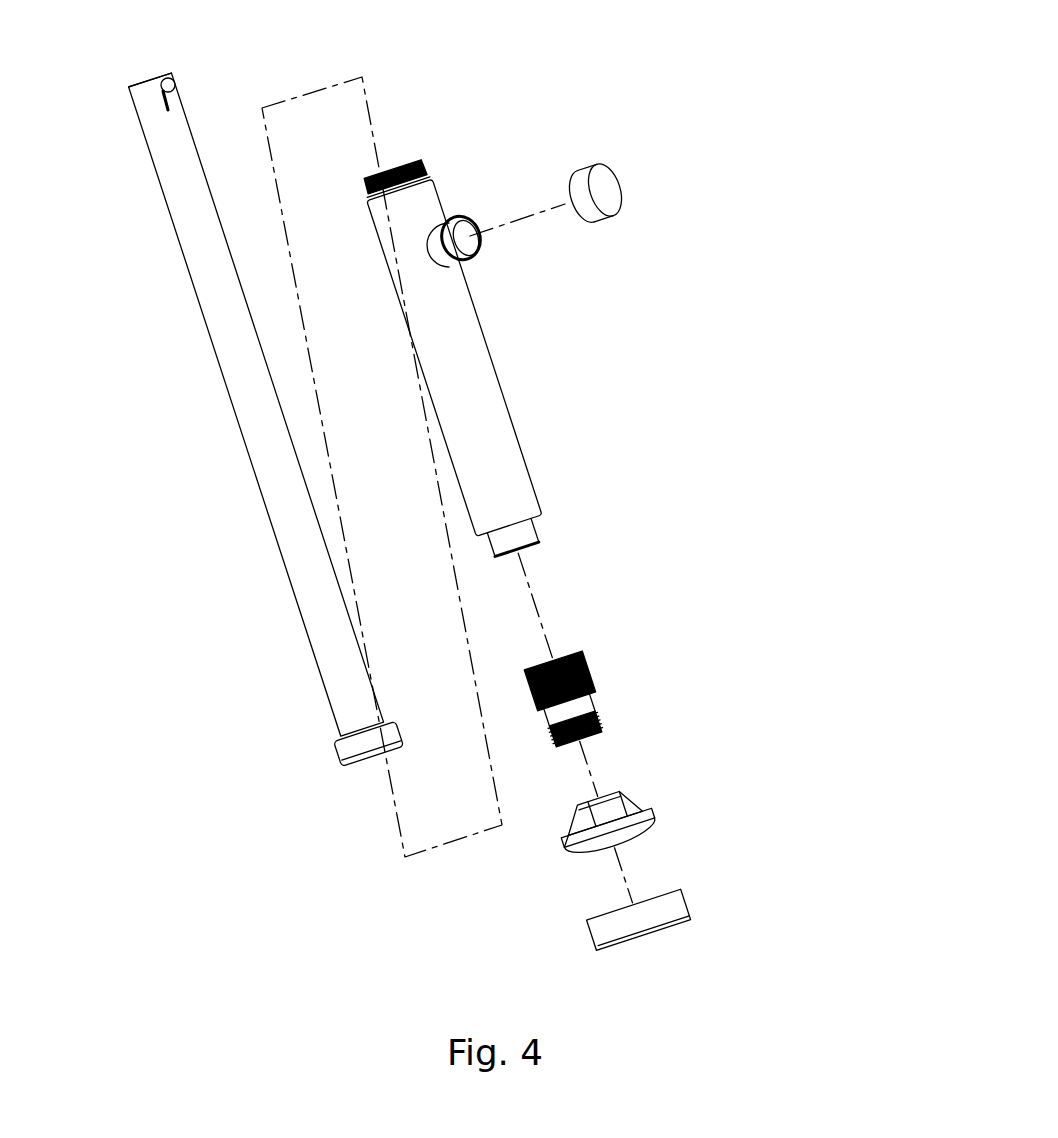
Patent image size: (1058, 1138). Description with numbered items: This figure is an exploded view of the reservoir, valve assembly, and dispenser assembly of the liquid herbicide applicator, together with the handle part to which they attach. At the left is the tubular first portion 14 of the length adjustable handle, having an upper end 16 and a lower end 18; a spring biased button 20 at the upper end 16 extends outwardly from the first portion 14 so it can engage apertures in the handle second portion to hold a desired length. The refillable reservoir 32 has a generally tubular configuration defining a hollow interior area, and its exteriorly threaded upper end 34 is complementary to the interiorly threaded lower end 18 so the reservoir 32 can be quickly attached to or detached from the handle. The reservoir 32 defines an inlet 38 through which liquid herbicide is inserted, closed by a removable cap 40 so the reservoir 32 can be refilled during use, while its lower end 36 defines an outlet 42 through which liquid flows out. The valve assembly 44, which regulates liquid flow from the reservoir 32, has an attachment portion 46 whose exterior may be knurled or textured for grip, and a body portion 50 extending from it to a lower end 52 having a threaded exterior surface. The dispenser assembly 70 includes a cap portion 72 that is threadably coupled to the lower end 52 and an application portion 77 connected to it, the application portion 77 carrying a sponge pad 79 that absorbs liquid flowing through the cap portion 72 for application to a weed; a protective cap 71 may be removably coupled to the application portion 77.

The first portion 14 is at (272, 480).
The upper end 16 is at (158, 82).
The lower end 18 is at (350, 752).
The spring biased button 20 is at (173, 78).
The reservoir 32 is at (490, 452).
The upper end 34 is at (420, 170).
The lower end 36 is at (528, 538).
The inlet 38 is at (463, 218).
The cap 40 is at (609, 189).
The outlet 42 is at (527, 552).
The valve assembly 44 is at (614, 683).
The attachment portion 46 is at (587, 653).
The body portion 50 is at (581, 707).
The lower end 52 is at (598, 723).
The dispenser assembly 70 is at (629, 834).
The protective cap 71 is at (673, 913).
The cap portion 72 is at (638, 793).
The application portion 77 is at (575, 858).
The sponge pad 79 is at (635, 825).